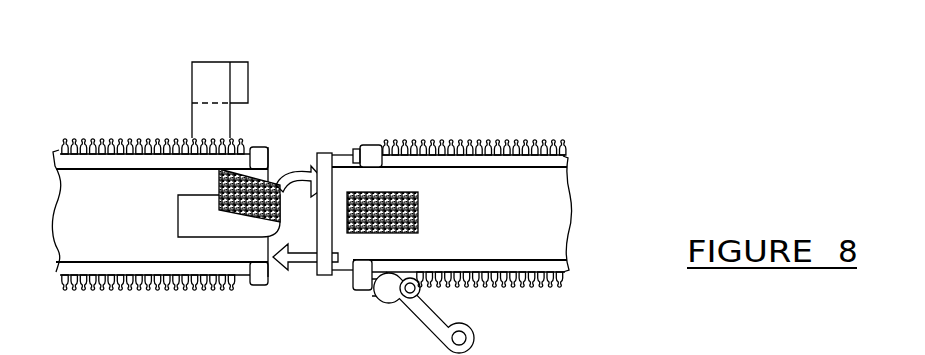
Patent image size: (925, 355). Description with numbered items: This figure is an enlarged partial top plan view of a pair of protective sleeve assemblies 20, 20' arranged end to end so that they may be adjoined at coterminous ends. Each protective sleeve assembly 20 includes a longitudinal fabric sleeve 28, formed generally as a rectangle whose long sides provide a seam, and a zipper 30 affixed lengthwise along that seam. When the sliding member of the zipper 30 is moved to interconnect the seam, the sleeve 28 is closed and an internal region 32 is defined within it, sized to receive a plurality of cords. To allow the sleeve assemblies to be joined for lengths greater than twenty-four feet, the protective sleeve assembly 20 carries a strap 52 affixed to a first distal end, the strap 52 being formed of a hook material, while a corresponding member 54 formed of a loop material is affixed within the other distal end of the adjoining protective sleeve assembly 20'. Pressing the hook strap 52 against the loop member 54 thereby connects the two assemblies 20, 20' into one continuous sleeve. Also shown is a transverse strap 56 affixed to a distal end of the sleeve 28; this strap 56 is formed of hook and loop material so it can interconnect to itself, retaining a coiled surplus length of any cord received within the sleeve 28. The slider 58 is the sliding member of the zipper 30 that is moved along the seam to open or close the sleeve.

The protective sleeve assembly 20 is at (155, 189).
The other protective sleeve assembly 20' is at (457, 181).
The longitudinal fabric sleeve 28 is at (77, 197).
The zipper 30 is at (230, 267).
The internal region 32 is at (132, 223).
The strap 52 is at (266, 192).
The corresponding member 54 is at (379, 196).
The transverse strap 56 is at (207, 70).
The slider 58 is at (168, 354).